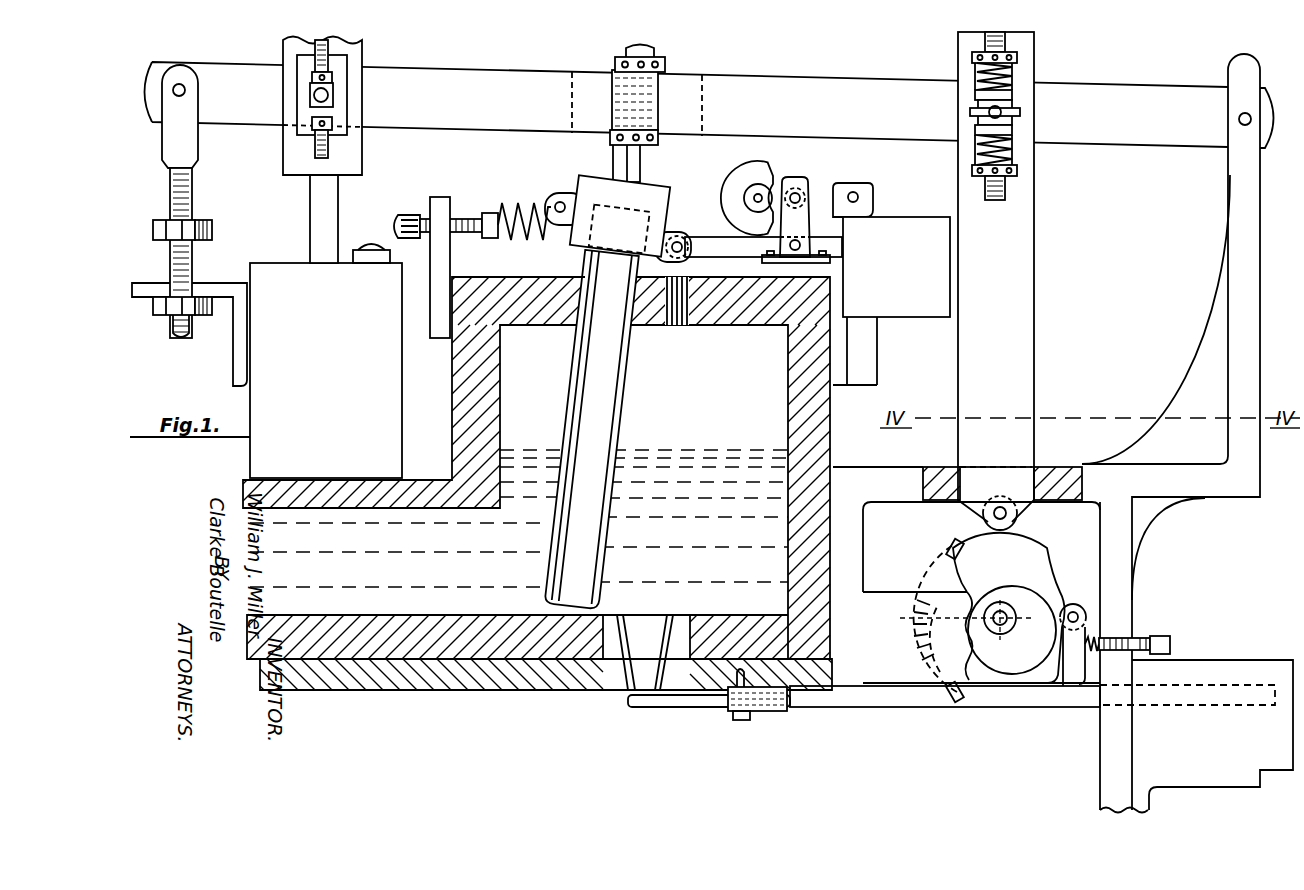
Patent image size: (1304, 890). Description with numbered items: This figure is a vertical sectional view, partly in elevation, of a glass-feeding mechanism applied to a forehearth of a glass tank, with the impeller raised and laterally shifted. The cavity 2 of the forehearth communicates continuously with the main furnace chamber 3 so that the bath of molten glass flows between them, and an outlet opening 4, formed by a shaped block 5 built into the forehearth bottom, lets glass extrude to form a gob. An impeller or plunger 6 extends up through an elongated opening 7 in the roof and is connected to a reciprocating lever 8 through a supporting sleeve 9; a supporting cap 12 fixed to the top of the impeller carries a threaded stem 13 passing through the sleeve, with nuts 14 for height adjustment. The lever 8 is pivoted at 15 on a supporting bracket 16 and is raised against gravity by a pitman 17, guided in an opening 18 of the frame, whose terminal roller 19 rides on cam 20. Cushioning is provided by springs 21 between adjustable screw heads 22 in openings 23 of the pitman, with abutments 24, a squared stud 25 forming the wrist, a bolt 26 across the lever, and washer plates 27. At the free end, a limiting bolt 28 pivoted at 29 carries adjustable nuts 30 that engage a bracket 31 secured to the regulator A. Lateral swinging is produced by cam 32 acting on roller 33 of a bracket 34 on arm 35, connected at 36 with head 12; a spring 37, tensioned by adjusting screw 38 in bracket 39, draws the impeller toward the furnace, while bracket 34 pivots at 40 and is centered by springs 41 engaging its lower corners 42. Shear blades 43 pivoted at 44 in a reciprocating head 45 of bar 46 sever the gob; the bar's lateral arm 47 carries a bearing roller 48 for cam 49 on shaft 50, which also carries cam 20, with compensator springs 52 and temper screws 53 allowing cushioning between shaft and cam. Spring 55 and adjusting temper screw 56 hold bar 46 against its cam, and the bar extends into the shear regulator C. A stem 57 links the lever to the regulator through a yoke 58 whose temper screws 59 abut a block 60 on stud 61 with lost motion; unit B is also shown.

The cavity of the forehearth 2 is at (537, 483).
The main furnace chamber 3 is at (385, 549).
The outlet opening 4 is at (645, 652).
The apertured block 5 is at (612, 682).
The impeller or plunger 6 is at (589, 429).
The elongated opening 7 is at (657, 315).
The reciprocating lever 8 is at (709, 105).
The supporting sleeve 9 is at (656, 130).
The supporting cap 12 is at (630, 218).
The threaded stem 13 is at (613, 161).
The nuts 14 is at (666, 66).
The pivot of lever 15 is at (1240, 114).
The supporting bracket 16 is at (1238, 241).
The pitman 17 is at (996, 277).
The opening of the frame 18 is at (960, 471).
The terminal roller 19 is at (1019, 520).
The cam 20 is at (1048, 555).
The springs 21 is at (1012, 73).
The adjustable screw heads 22 is at (1014, 57).
The openings of the pitman 23 is at (1013, 83).
The inwardly extending abutments 24 is at (980, 109).
The squared stud 25 is at (977, 93).
The stem or bolt 26 is at (982, 129).
The washer plates 27 is at (1014, 126).
The limiting bolt 28 is at (193, 201).
The pivotal connection of limiting bolt 29 is at (185, 87).
The adjustable nuts 30 is at (213, 229).
The flange or bracket 31 is at (160, 283).
The cam 32 is at (765, 172).
The roller 33 is at (807, 197).
The bracket 34 is at (787, 254).
The arm 35 is at (733, 250).
The connection of arm to head 36 is at (682, 243).
The spring 37 is at (536, 238).
The adjusting screw 38 is at (456, 228).
The abutment or bracket 39 is at (441, 214).
The pivot of bracket 40 is at (796, 251).
The springs 41 is at (796, 266).
The lower corners of bracket 42 is at (811, 252).
The blades 43 is at (630, 701).
The pivot of blades 44 is at (741, 722).
The reciprocating head 45 is at (760, 713).
The bar 46 is at (873, 706).
The lateral arm 47 is at (1073, 656).
The bearing roller 48 is at (1087, 614).
The cam 49 is at (978, 630).
The shaft 50 is at (1000, 628).
The springs 52 is at (930, 612).
The temper screws 53 is at (951, 555).
The spring 55 is at (1094, 643).
The adjusting temper screw 56 is at (1171, 645).
The stem 57 is at (318, 215).
The yoke 58 is at (290, 146).
The adjusting temper screws 59 is at (333, 77).
The block 60 is at (334, 95).
The stud 61 is at (313, 95).
The casing or regulator A is at (326, 370).
The unit B is at (891, 301).
The shear regulator C is at (1196, 735).